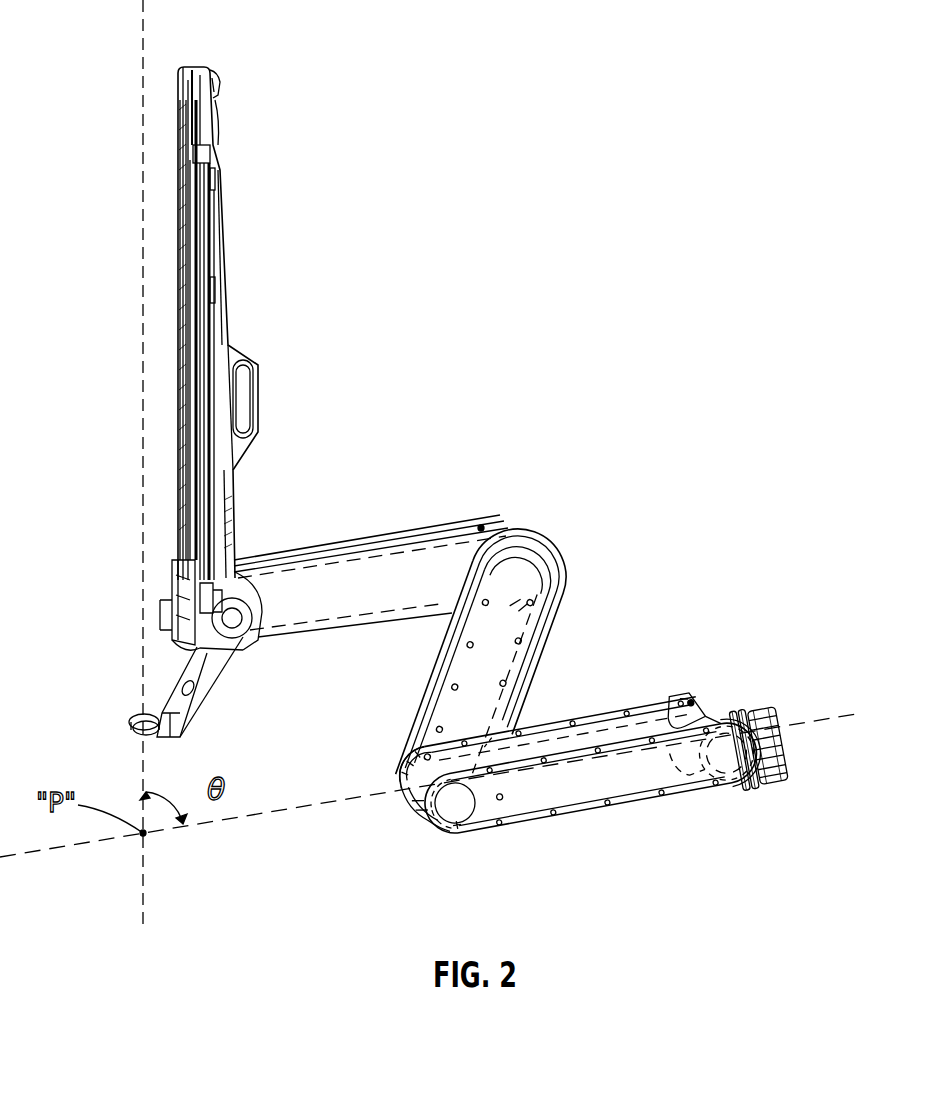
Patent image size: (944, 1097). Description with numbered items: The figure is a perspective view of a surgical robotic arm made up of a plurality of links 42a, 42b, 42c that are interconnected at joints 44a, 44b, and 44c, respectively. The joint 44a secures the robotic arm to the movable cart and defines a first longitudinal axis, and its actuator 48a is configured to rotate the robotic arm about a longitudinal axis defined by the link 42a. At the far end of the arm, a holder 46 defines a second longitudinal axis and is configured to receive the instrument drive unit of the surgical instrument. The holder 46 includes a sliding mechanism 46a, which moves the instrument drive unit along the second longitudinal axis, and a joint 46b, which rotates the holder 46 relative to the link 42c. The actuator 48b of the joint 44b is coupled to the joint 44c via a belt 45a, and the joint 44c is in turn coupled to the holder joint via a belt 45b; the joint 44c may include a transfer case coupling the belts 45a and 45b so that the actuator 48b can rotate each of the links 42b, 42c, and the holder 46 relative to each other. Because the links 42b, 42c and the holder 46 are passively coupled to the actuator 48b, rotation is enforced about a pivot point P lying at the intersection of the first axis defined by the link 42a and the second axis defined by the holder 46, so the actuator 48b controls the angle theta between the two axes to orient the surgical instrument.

The holder 46 is at (208, 122).
The sliding mechanism 46a is at (180, 267).
The joint 46b is at (238, 590).
The link 42c is at (330, 546).
The belt 45b is at (442, 548).
The joint 44c is at (535, 572).
The belt 45a is at (523, 620).
The link 42b is at (484, 701).
The actuator 48a is at (762, 693).
The joint 44a is at (782, 763).
The actuator 48b is at (413, 803).
The joint 44b is at (448, 840).
The link 42a is at (603, 793).